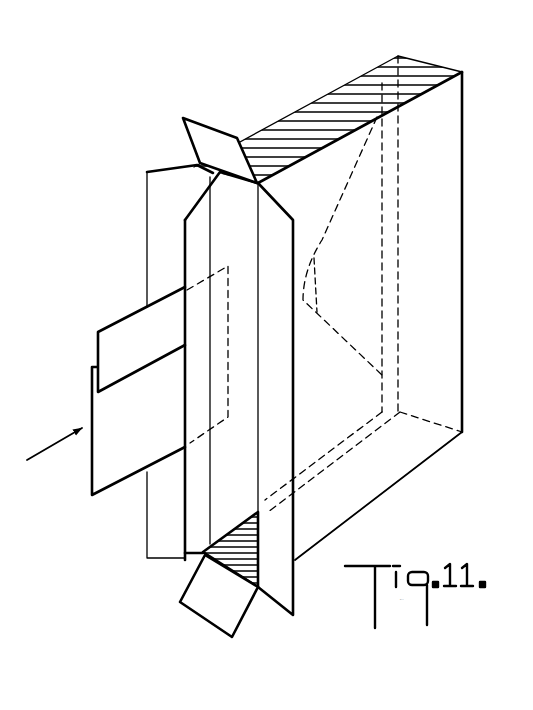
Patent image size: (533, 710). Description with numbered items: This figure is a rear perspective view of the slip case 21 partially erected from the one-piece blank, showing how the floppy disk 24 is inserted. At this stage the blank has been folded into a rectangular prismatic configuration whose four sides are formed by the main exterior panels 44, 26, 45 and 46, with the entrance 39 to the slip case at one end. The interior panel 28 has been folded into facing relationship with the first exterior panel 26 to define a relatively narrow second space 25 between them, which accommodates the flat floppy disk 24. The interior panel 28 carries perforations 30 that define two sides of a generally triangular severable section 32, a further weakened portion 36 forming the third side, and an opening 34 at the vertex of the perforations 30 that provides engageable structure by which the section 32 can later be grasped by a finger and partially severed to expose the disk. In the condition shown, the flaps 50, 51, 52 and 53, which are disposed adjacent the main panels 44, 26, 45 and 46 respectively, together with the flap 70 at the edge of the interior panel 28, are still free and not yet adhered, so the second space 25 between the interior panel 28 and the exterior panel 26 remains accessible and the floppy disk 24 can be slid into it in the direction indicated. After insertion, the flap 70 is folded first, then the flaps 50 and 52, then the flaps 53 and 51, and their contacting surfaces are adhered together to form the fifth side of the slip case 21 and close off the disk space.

The slip case 21 is at (346, 294).
The floppy disk 24 is at (121, 460).
The second space 25 is at (199, 178).
The first exterior panel 26 is at (274, 123).
The interior panel 28 is at (245, 228).
The weakened portions 30 is at (342, 246).
The severable section 32 is at (374, 302).
The opening 34 is at (310, 289).
The weakened portion 36 is at (379, 173).
The entrance 39 is at (471, 221).
The main exterior panel 44 is at (402, 485).
The main exterior panel 45 is at (335, 122).
The main exterior panel 46 is at (322, 402).
The flap 50 is at (216, 604).
The flap 51 is at (166, 228).
The flap 52 is at (213, 138).
The flap 53 is at (270, 242).
The flap 70 is at (197, 514).